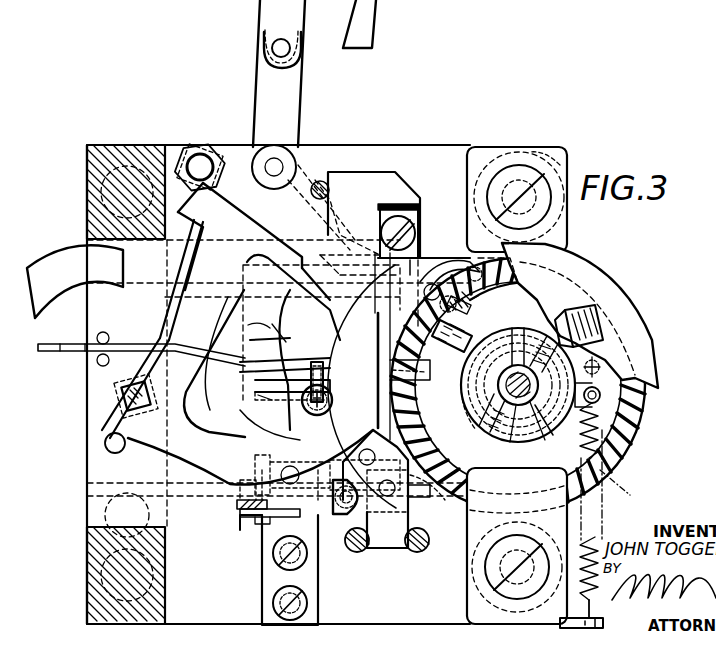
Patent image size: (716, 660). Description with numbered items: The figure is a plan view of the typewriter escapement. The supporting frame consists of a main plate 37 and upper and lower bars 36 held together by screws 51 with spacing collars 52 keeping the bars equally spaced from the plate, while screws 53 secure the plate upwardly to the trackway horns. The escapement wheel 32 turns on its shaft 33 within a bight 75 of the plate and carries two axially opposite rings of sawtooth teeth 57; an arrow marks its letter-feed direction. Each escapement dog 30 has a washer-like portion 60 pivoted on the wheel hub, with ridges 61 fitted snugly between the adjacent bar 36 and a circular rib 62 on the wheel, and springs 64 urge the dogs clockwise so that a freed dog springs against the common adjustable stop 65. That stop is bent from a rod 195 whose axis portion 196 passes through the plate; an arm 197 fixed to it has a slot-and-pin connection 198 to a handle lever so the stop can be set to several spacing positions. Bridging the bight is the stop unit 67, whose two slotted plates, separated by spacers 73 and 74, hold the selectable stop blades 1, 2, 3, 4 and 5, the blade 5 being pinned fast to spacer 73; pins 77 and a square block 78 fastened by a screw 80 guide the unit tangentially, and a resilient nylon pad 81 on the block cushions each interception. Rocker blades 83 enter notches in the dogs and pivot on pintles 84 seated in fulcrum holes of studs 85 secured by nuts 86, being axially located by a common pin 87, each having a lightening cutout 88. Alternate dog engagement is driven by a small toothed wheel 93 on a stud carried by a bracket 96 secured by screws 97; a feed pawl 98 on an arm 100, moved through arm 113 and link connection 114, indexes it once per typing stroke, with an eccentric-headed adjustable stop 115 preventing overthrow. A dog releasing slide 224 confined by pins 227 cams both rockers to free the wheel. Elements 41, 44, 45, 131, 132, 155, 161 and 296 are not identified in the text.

The stop 1 is at (279, 334).
The stop 2 is at (259, 334).
The stop 3 is at (264, 388).
The stop 4 is at (272, 400).
The stop blade 5 is at (382, 476).
The escapement dog 30 is at (455, 343).
The escapement wheel 32 is at (652, 414).
The shaft 33 is at (532, 415).
The bar 36 is at (568, 240).
The main plate 37 is at (460, 157).
The cam 41 is at (644, 343).
The spoke 44 is at (545, 330).
The pawl 45 is at (580, 322).
The screw 51 is at (514, 185).
The spacing collar 52 is at (560, 165).
The screw 53 is at (87, 184).
The ring of teeth 57 is at (612, 470).
The washer-like portion 60 is at (522, 412).
The ridge 61 is at (492, 418).
The circular rib 62 is at (475, 420).
The spring 64 is at (603, 539).
The stop 65 is at (470, 345).
The stop unit 67 is at (325, 250).
The spacer 73 is at (427, 473).
The spacer 74 is at (379, 374).
The bight 75 is at (250, 360).
The pin 77 is at (324, 187).
The square block 78 is at (420, 250).
The screw 80 is at (380, 231).
The pad of resilient material 81 is at (421, 212).
The rocker blade 83 is at (172, 344).
The pintle 84 is at (216, 180).
The stud 85 is at (200, 154).
The nut 86 is at (187, 158).
The pin 87 is at (116, 452).
The cutout 88 is at (218, 318).
The toothed wheel 93 is at (250, 470).
The bracket 96 is at (268, 610).
The screw 97 is at (278, 598).
The feed pawl 98 is at (262, 490).
The arm 100 is at (279, 547).
The arm 113 is at (237, 504).
The link connection 114 is at (260, 515).
The adjustable stop 115 is at (340, 516).
The bar 131 is at (240, 385).
The link 132 is at (452, 8).
The link 155 is at (348, 24).
The pin 161 is at (372, 12).
The rod 195 is at (310, 208).
The axis portion 196 is at (274, 160).
The arm 197 is at (256, 97).
The slot-and-pin connection 198 is at (270, 50).
The dog releasing slide 224 is at (80, 338).
The pin 227 is at (100, 360).
The blade 296 is at (45, 262).